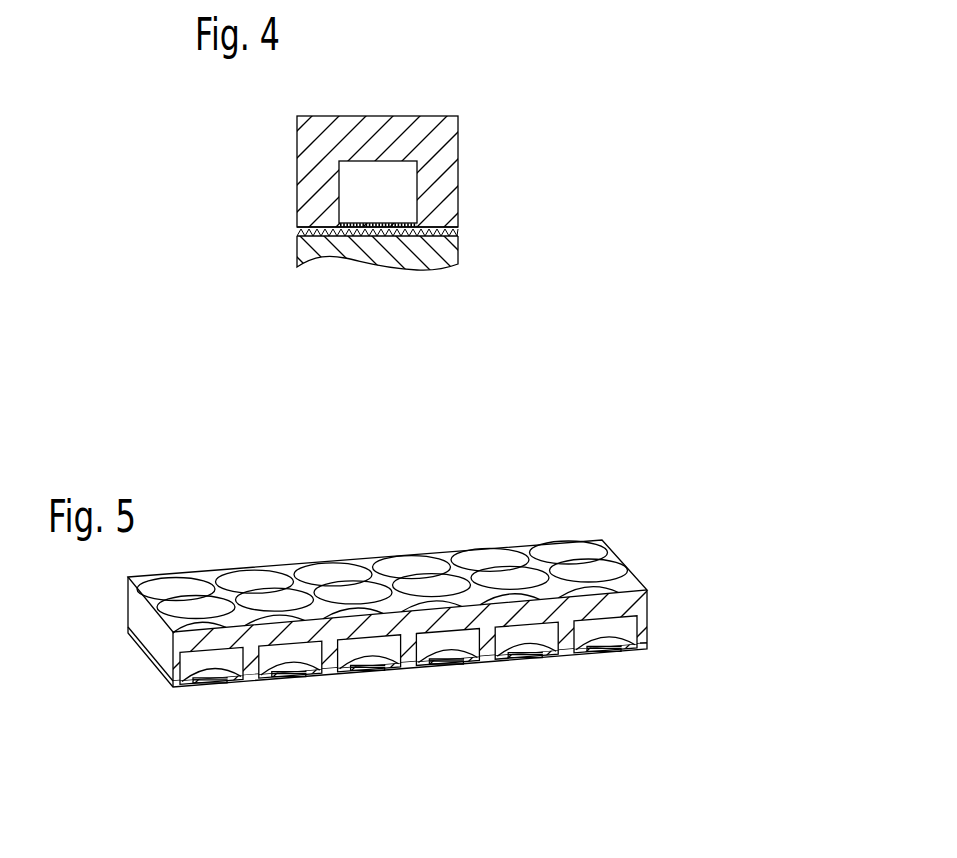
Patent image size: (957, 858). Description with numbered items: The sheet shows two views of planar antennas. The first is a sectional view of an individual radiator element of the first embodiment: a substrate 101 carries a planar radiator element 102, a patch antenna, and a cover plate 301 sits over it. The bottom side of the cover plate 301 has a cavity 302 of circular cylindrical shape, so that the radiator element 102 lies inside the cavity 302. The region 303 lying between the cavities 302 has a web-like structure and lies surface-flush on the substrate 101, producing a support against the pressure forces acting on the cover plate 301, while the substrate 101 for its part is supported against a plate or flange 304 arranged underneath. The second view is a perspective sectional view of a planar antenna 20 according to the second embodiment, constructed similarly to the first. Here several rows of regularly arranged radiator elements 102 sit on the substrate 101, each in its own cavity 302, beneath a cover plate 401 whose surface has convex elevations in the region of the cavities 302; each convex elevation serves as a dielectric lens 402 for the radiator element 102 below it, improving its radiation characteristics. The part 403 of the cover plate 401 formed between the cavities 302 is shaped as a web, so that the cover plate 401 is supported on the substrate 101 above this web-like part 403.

In FIG. 5, the planar antenna 20 is at (417, 616).
In FIG. 4, the substrate 101 is at (448, 258).
In FIG. 5, the substrate 101 is at (207, 689).
In FIG. 4, the planar radiator element 102 is at (363, 220).
In FIG. 5, the planar radiator element 102 is at (265, 685).
In FIG. 4, the cover plate 301 is at (337, 142).
In FIG. 4, the cavity 302 is at (398, 176).
In FIG. 5, the cavity 302 is at (203, 665).
In FIG. 4, the region between the cavities 303 is at (443, 168).
In FIG. 4, the plate or flange 304 is at (343, 247).
In FIG. 5, the cover plate 401 is at (642, 611).
In FIG. 5, the dielectric lens 402 is at (592, 587).
In FIG. 5, the web-like part of the cover plate 403 is at (167, 683).